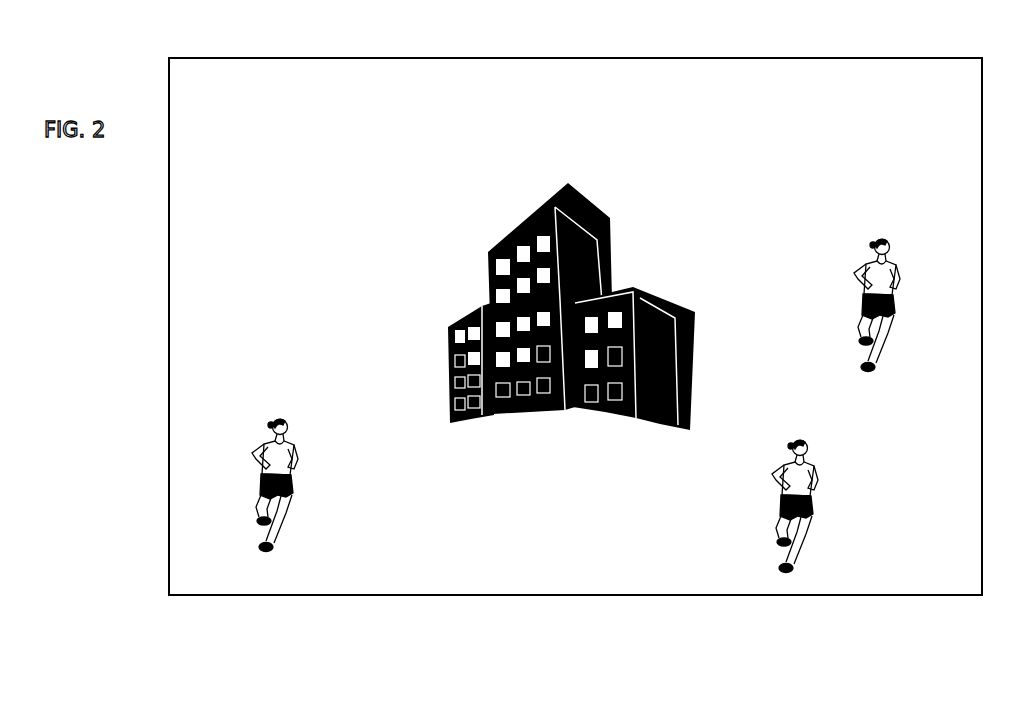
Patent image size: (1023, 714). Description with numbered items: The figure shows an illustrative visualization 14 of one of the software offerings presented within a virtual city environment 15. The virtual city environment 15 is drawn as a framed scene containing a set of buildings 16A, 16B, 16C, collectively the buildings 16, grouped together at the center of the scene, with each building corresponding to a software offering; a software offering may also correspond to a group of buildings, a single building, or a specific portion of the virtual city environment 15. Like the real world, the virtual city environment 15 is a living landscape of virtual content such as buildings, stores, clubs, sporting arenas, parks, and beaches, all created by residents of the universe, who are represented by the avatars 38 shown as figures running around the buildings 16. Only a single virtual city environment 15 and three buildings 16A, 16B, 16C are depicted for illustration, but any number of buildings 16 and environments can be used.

The visualization 14 is at (923, 58).
The virtual city environment 15 is at (857, 128).
The buildings 16 is at (404, 155).
The building 16A is at (450, 343).
The building 16B is at (523, 238).
The building 16C is at (657, 303).
The avatars 38 is at (288, 415).